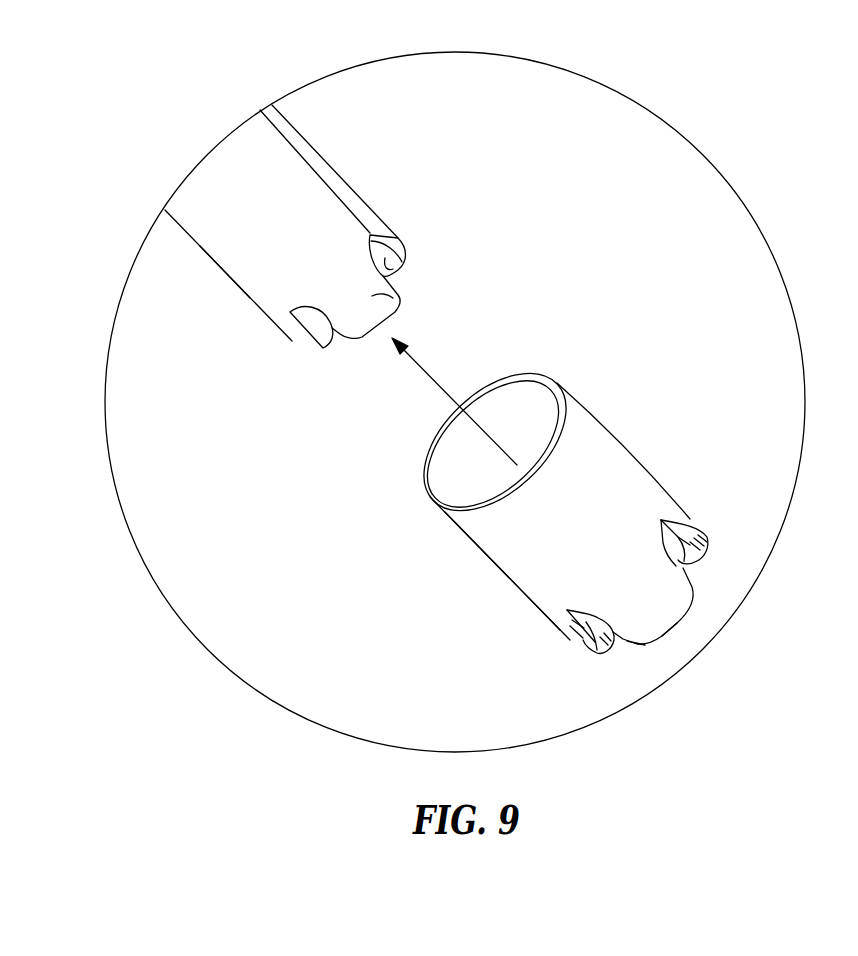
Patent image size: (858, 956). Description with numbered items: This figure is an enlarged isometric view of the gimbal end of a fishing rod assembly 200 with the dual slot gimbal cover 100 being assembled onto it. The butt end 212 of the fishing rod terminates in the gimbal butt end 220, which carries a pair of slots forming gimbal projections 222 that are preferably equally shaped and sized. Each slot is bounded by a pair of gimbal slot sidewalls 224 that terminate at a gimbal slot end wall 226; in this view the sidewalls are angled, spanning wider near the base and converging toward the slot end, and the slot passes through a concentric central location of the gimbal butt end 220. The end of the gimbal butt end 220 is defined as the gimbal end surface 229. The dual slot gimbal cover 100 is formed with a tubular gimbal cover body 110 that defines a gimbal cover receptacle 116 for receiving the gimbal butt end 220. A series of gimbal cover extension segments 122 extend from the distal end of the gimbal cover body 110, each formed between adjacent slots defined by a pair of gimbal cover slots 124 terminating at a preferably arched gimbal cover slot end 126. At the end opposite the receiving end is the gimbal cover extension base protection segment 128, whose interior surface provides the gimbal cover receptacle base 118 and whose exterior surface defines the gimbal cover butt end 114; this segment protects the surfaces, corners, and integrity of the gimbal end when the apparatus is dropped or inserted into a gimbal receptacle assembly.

The fishing rod assembly 200 is at (346, 108).
The gimbal butt end 220 is at (218, 312).
The butt end 212 is at (227, 243).
The gimbal projection 222 is at (390, 233).
The gimbal slot end wall 226 is at (388, 243).
The gimbal slot sidewall 224 is at (386, 262).
The gimbal end surface 229 is at (376, 333).
The dual slot gimbal cover 100 is at (645, 435).
The gimbal cover receptacle 116 is at (455, 493).
The gimbal cover body 110 is at (525, 580).
The gimbal cover extension segment 122 is at (686, 524).
The gimbal cover slot end 126 is at (697, 529).
The gimbal cover slot 124 is at (704, 557).
The gimbal cover receptacle base 118 is at (592, 620).
The gimbal cover butt end 114 is at (671, 635).
The gimbal cover extension base protection segment 128 is at (639, 646).